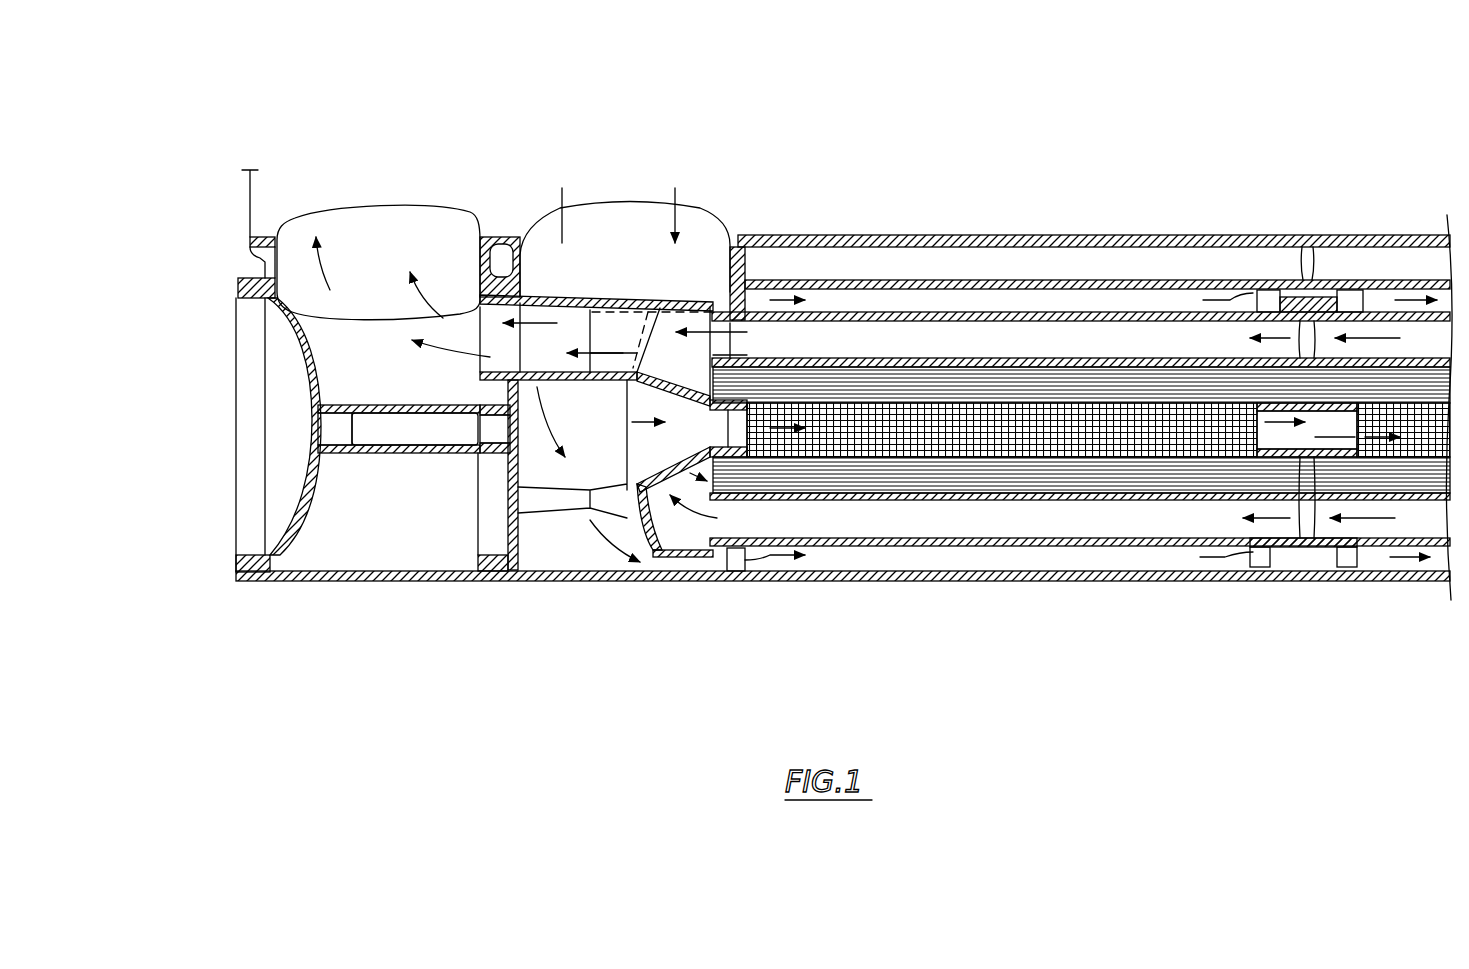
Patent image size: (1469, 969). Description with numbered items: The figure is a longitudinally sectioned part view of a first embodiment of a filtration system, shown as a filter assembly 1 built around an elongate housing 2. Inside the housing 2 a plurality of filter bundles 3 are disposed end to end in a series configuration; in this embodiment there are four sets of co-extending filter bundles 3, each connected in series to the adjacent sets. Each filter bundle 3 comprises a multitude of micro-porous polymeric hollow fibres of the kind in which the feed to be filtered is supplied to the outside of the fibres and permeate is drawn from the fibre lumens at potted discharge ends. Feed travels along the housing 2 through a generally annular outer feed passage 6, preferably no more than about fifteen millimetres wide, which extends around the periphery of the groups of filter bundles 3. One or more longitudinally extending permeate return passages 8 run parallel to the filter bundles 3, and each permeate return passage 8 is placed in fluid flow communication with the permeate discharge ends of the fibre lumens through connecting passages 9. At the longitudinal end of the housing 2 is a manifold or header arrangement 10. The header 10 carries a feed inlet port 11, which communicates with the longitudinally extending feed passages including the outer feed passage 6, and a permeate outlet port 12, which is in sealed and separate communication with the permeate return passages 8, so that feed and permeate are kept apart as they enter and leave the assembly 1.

The filter assembly 1 is at (727, 127).
The elongate housing 2 is at (1070, 700).
The filter bundles 3 is at (845, 375).
The outer feed passage 6 is at (1128, 235).
The permeate return passages 8 is at (1200, 235).
The connecting passages 9 is at (1340, 235).
The manifold or header arrangement 10 is at (265, 612).
The feed inlet port 11 is at (598, 235).
The permeate outlet port 12 is at (420, 235).